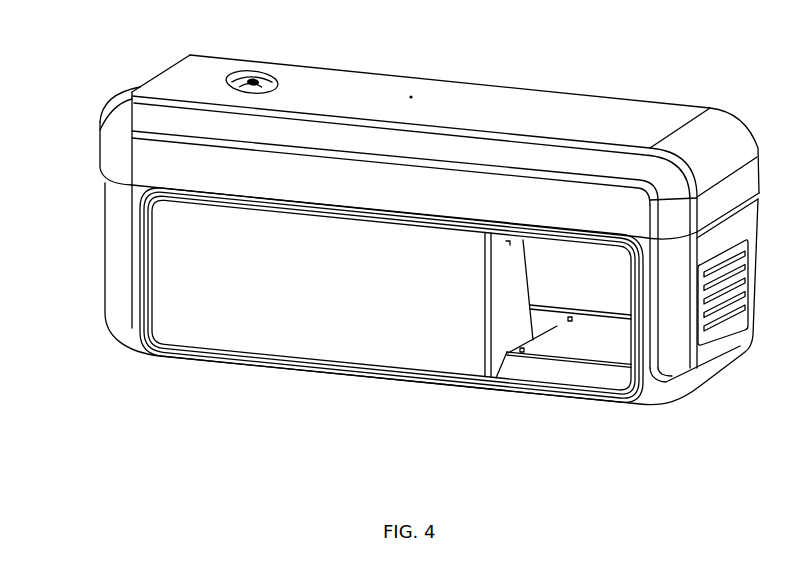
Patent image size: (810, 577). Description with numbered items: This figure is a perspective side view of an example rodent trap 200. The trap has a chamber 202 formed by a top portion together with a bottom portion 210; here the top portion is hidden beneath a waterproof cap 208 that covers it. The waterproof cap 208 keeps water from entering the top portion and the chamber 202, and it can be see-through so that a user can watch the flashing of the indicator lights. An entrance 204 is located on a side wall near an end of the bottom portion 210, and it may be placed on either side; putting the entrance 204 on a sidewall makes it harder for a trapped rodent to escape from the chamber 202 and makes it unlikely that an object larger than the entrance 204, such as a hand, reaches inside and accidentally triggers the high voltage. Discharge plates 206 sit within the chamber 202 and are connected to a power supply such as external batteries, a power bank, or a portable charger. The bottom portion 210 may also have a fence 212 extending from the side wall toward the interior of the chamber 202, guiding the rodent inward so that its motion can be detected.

The rodent trap 200 is at (213, 472).
The chamber 202 is at (547, 328).
The entrance 204 is at (625, 378).
The discharge plates 206 is at (585, 352).
The waterproof cap 208 is at (112, 152).
The bottom portion 210 is at (115, 266).
The fence 212 is at (507, 307).